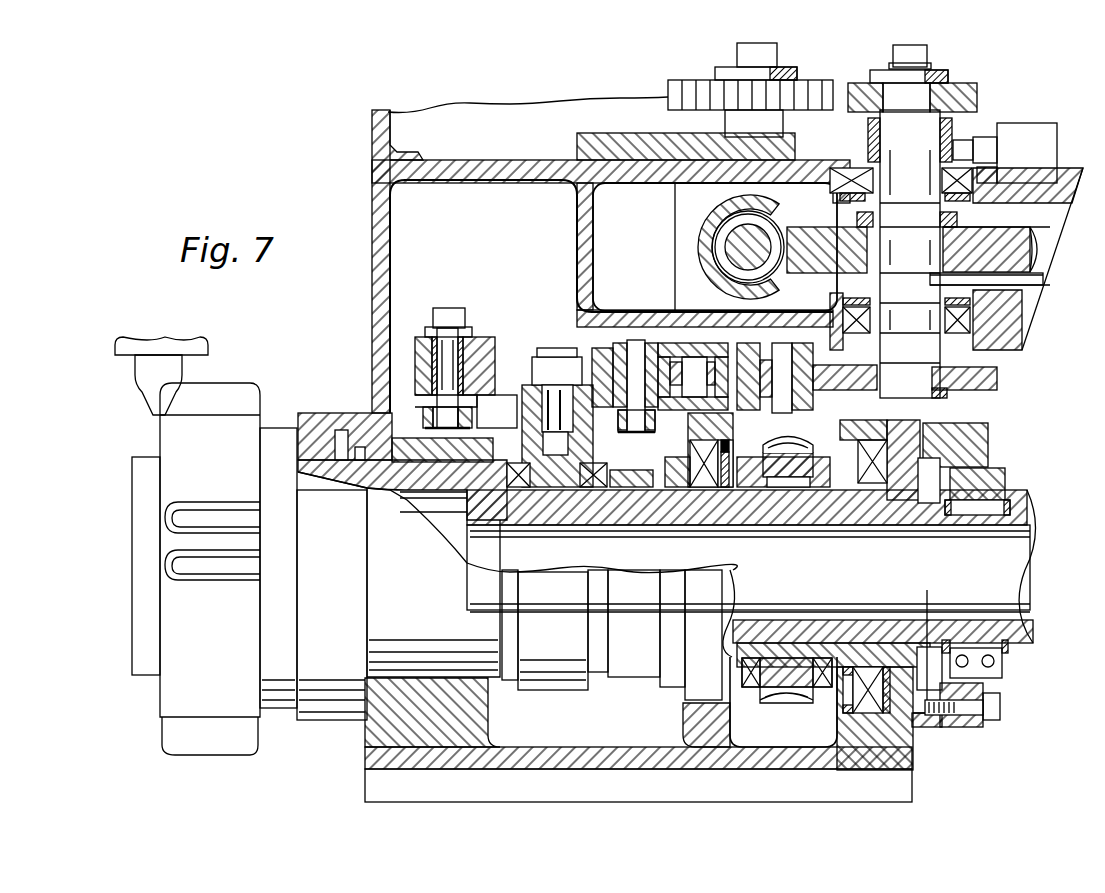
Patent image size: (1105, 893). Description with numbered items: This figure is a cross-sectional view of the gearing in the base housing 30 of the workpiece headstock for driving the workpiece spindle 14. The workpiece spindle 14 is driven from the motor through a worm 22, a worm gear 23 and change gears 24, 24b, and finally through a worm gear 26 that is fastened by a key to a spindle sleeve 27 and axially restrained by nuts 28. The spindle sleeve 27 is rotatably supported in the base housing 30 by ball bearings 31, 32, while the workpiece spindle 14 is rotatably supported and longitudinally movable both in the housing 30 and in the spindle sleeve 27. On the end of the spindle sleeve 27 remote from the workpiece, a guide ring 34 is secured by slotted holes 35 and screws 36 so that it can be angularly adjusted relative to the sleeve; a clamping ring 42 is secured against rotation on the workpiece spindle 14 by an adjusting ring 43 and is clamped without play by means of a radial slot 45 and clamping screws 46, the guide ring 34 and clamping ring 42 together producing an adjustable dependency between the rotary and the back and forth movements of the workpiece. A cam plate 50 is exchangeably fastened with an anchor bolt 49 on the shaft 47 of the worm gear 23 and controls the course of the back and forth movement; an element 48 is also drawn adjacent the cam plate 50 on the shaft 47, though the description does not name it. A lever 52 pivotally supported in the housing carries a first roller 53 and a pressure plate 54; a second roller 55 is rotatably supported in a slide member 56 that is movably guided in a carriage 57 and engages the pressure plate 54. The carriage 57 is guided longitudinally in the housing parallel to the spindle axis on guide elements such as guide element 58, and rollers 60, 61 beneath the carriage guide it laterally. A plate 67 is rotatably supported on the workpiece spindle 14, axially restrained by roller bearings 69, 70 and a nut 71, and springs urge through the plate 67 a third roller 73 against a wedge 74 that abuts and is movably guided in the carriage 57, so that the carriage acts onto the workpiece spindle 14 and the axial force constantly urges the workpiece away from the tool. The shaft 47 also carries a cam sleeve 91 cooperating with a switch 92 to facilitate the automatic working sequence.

The workpiece spindle 14 is at (322, 438).
The worm 22 is at (733, 243).
The worm gear 23 is at (1040, 255).
The change gear 24 is at (977, 92).
The change gear 24b is at (700, 92).
The worm gear 26 is at (787, 700).
The spindle sleeve 27 is at (890, 493).
The nuts 28 is at (830, 667).
The base housing 30 is at (897, 768).
The ball bearing 31 is at (905, 718).
The ball bearing 32 is at (702, 480).
The guide ring 34 is at (970, 445).
The slotted holes 35 is at (978, 727).
The screws 36 is at (995, 713).
The clamping ring 42 is at (980, 487).
The adjusting ring 43 is at (973, 508).
The radial slot 45 is at (988, 673).
The clamping screws 46 is at (992, 662).
The shaft 47 is at (935, 292).
The flange 48 is at (997, 370).
The anchor bolt 49 is at (925, 56).
The cam plate 50 is at (965, 383).
The lever 52 is at (812, 403).
The first roller 53 is at (763, 340).
The pressure plate 54 is at (727, 340).
The second roller 55 is at (673, 340).
The slide member 56 is at (655, 340).
The carriage 57 is at (485, 347).
The guide element 58 is at (500, 415).
The roller 60 is at (423, 416).
The roller 61 is at (622, 432).
The plate 67 is at (557, 477).
The roller bearing 69 is at (517, 490).
The roller bearing 70 is at (593, 490).
The nut 71 is at (632, 483).
The third roller 73 is at (563, 353).
The wedge 74 is at (600, 360).
The cam sleeve 91 is at (868, 148).
The switch 92 is at (1048, 152).